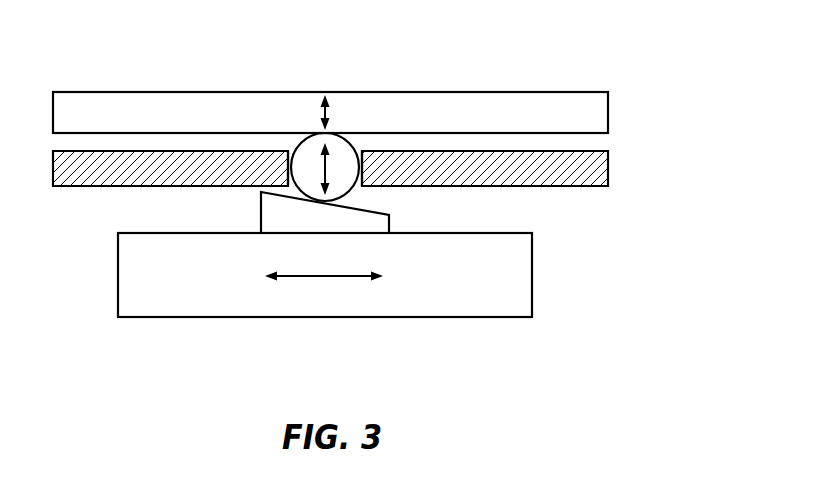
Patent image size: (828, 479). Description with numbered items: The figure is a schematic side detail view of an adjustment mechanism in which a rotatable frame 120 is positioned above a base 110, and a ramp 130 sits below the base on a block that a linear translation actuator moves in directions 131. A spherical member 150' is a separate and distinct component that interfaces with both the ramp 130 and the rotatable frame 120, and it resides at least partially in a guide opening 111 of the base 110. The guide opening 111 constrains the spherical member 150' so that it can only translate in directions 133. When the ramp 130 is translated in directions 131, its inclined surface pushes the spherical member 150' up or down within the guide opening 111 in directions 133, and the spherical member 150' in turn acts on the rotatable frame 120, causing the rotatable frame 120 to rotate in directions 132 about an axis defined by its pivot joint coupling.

The base 110 is at (608, 166).
The guide opening 111 is at (287, 138).
The rotatable frame 120 is at (608, 114).
The ramp 130 is at (369, 212).
The directions of ramp movement 131 is at (327, 277).
The directions of rotatable frame movement 132 is at (328, 112).
The directions of spherical member movement 133 is at (327, 167).
The spherical member 150' is at (320, 120).